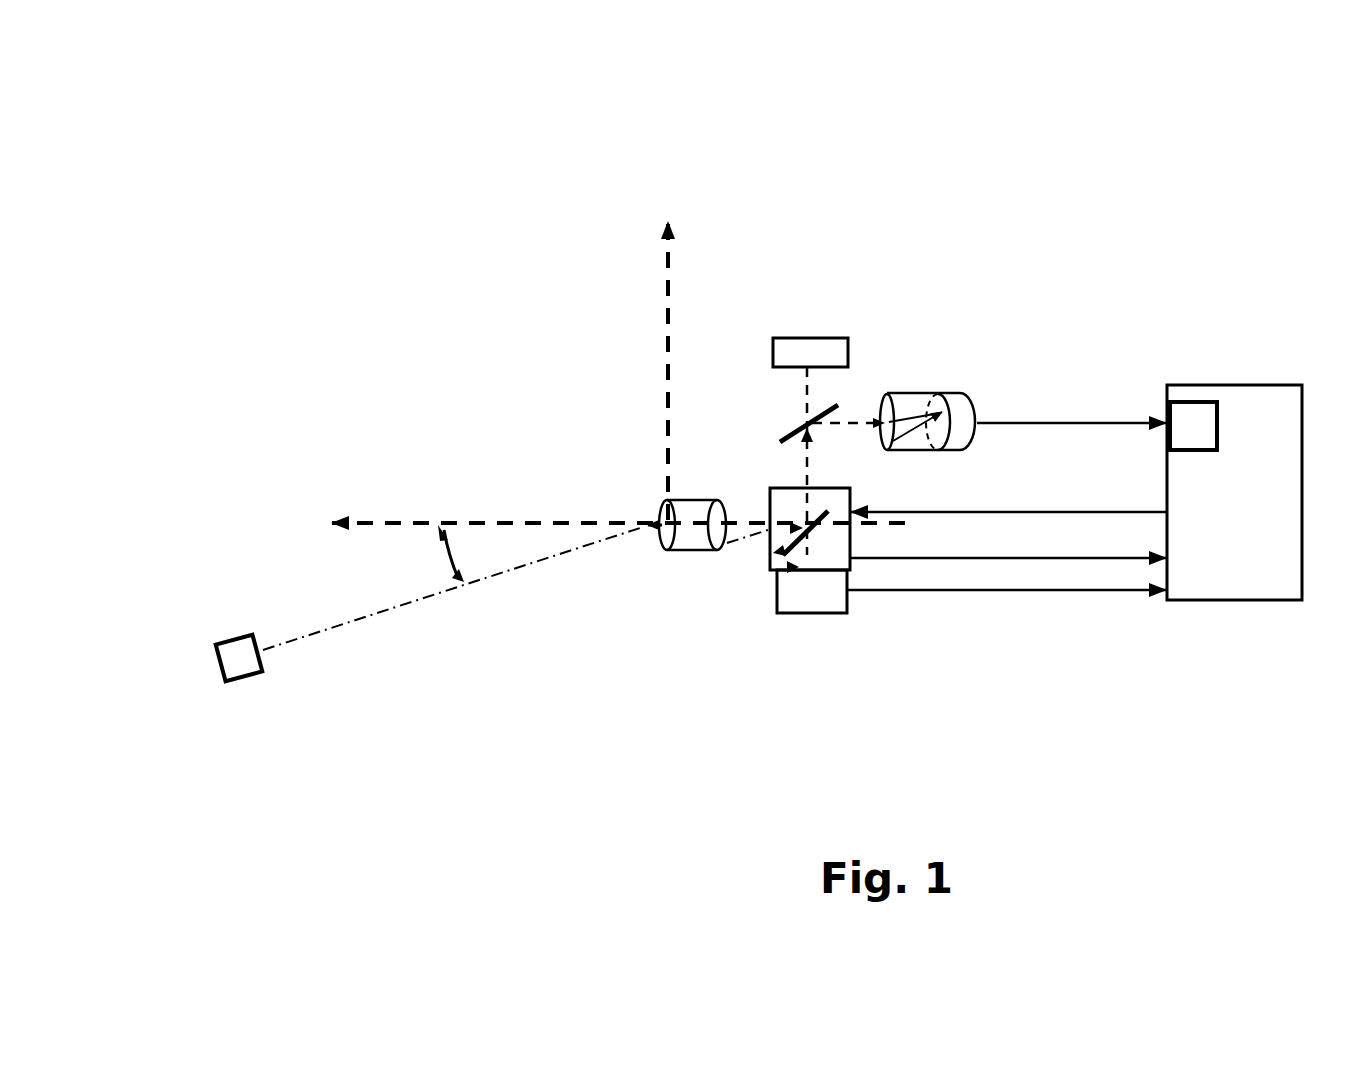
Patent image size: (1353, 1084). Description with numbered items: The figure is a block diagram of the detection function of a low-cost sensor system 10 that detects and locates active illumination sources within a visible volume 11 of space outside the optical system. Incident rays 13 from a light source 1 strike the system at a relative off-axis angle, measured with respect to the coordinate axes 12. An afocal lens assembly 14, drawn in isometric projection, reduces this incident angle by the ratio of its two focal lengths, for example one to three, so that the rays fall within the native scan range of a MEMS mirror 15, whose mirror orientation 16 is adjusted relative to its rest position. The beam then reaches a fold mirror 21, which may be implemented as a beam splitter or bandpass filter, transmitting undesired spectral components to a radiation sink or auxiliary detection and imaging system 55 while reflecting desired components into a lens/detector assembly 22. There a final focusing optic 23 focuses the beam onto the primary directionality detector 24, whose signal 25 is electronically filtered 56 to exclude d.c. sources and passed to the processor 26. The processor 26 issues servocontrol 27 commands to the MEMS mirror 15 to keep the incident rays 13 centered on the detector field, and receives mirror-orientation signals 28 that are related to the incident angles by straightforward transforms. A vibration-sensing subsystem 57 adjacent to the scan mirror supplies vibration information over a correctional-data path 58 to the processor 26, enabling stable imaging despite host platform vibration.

The light source 1 is at (239, 658).
The sensor system 10 is at (1010, 742).
The visible volume 11 is at (330, 505).
The coordinate axes / line of sight 12 is at (563, 524).
The incident rays 13 is at (517, 587).
The afocal lens assembly 14 is at (688, 555).
The MEMS mirror 15 is at (803, 470).
The mirror orientation 16 is at (766, 563).
The fold mirror 21 is at (785, 426).
The lens/detector assembly 22 is at (888, 390).
The final focusing optic 23 is at (899, 443).
The primary directionality detector 24 is at (964, 414).
The detector signal 25 is at (1071, 417).
The processor 26 is at (1229, 495).
The servocontrol 27 is at (1009, 505).
The mirror-orientation signals 28 is at (1008, 545).
The auxiliary detection and imaging system 55 is at (793, 360).
The electronic filter 56 is at (1210, 439).
The vibration-sensing subsystem 57 is at (801, 608).
The correctional-data path 58 is at (1006, 608).